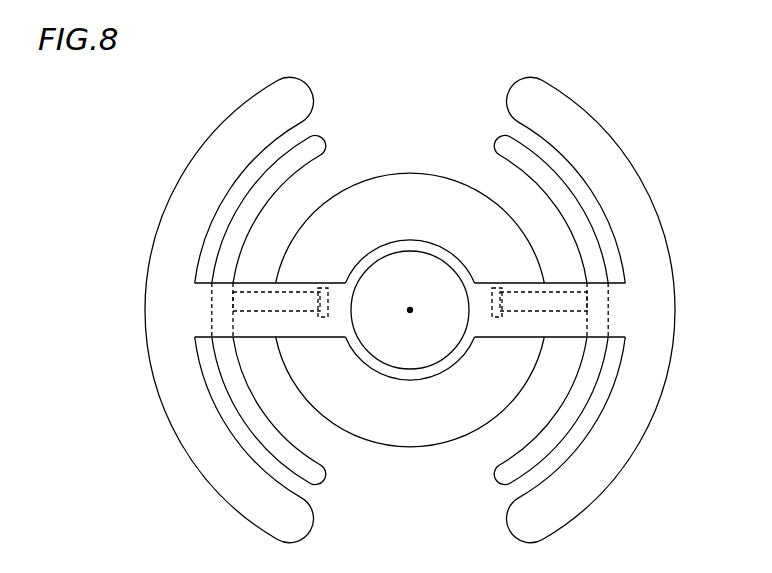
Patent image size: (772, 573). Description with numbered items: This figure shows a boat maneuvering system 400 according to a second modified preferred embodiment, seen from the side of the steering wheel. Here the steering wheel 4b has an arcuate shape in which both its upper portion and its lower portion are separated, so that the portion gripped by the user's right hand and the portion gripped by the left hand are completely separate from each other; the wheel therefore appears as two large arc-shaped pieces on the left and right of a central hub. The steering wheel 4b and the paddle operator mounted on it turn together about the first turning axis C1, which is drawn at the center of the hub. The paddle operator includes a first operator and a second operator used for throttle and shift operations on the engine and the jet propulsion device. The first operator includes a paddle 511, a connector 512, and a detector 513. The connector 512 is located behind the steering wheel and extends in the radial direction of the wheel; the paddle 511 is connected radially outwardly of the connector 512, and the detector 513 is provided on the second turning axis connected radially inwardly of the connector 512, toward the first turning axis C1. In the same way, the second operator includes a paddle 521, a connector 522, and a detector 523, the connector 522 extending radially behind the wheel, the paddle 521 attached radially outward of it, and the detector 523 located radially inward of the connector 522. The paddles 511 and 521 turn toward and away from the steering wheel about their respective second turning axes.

The boat maneuvering system 400 is at (608, 66).
The steering wheel 4b is at (607, 154).
The first turning axis C1 is at (410, 307).
The paddle 521 is at (216, 365).
The connector 522 is at (230, 297).
The detector 523 is at (318, 317).
The paddle 511 is at (590, 221).
The connector 512 is at (560, 303).
The detector 513 is at (503, 312).